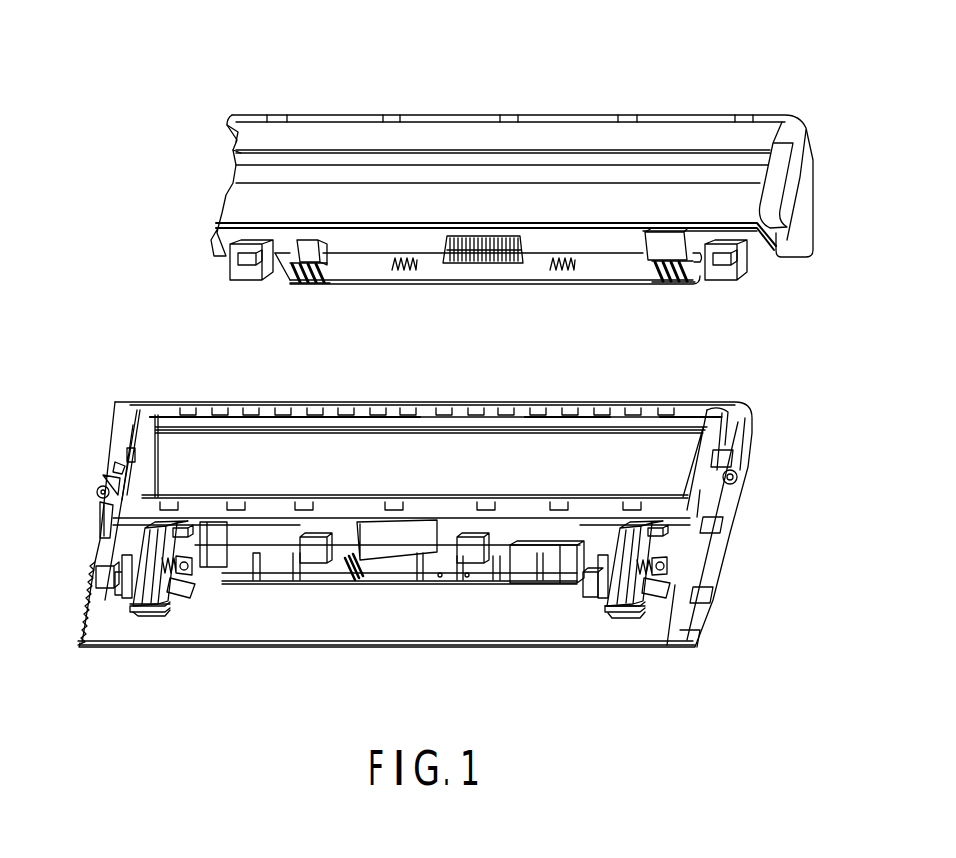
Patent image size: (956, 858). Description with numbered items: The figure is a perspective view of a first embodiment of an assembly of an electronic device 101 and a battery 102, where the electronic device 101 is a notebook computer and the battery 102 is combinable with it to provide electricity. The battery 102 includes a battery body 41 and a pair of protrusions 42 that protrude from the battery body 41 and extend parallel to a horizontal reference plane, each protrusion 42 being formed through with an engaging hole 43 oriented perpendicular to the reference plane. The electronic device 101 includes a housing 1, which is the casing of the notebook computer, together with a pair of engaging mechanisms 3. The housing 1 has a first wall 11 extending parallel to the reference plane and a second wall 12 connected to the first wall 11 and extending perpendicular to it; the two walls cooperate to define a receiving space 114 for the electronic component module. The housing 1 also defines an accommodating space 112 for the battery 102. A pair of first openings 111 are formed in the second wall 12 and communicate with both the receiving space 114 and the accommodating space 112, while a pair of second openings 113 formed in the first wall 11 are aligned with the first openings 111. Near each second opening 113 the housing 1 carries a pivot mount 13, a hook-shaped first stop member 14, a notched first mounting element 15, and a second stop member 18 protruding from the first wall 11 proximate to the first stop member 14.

The housing 1 is at (754, 411).
The electronic device 101 is at (103, 424).
The battery 102 is at (198, 148).
The battery body 41 is at (242, 199).
The protrusions 42 is at (244, 276).
The engaging hole 43 is at (242, 260).
The first wall 11 is at (400, 618).
The first openings 111 is at (178, 530).
The accommodating space 112 is at (410, 470).
The second openings 113 is at (167, 610).
The receiving space 114 is at (457, 622).
The second wall 12 is at (612, 530).
The pivot mount 13 is at (200, 588).
The first stop member 14 is at (110, 600).
The first mounting element 15 is at (178, 594).
The second stop member 18 is at (128, 602).
The engaging mechanisms 3 is at (150, 620).